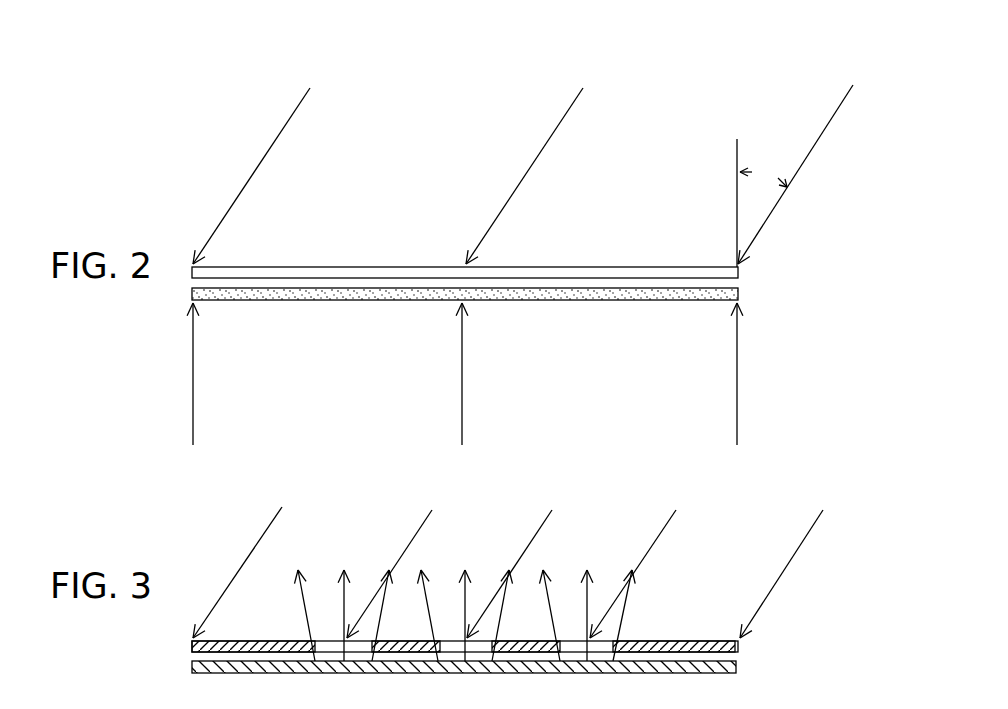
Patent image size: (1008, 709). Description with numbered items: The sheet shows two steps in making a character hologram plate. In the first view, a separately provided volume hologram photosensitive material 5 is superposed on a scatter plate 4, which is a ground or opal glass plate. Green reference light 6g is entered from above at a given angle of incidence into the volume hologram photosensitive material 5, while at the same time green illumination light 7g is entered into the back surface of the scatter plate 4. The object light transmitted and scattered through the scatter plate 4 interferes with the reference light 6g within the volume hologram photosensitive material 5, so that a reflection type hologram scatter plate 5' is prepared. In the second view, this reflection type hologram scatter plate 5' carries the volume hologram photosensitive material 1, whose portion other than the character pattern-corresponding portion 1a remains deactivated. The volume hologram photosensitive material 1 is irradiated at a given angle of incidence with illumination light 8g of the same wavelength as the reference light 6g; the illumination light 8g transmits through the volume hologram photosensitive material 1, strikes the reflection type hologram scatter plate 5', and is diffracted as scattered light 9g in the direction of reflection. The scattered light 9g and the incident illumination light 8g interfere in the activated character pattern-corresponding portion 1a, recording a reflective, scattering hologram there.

In FIG. 2, the scatter plate 4 is at (738, 294).
In FIG. 2, the volume hologram photosensitive material 5 is at (501, 266).
In FIG. 2, the reference light 6g is at (818, 139).
In FIG. 2, the illumination light 7g is at (738, 378).
In FIG. 3, the volume hologram photosensitive material 1 is at (501, 621).
In FIG. 3, the character pattern-corresponding portion 1a is at (603, 642).
In FIG. 3, the reflection type hologram scatter plate 5' is at (502, 666).
In FIG. 3, the illumination light 8g is at (800, 548).
In FIG. 3, the scattered light 9g is at (635, 549).